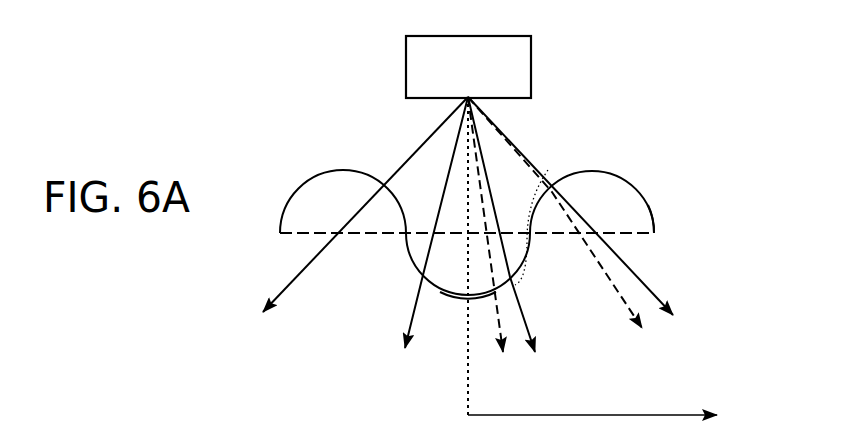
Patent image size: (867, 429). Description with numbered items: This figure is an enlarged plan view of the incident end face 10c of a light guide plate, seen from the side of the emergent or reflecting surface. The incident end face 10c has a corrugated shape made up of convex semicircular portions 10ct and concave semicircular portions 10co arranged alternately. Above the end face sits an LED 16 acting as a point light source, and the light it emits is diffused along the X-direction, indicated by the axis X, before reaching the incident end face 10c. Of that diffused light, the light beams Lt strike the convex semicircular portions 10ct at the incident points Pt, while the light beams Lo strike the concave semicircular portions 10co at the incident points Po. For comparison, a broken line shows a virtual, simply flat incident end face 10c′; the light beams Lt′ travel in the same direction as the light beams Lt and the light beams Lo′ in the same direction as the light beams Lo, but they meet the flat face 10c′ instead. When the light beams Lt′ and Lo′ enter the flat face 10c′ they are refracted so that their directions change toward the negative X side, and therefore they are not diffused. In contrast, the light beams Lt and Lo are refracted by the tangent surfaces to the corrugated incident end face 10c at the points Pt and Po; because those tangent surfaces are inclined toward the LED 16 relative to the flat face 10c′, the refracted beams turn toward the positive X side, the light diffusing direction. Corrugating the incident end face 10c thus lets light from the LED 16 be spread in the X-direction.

The LED 16 is at (406, 60).
The incident end face 10c is at (628, 138).
The convex semicircular portions 10ct is at (648, 204).
The flat incident end face 10c′ is at (630, 234).
The concave semicircular portions 10co is at (461, 294).
The incident points Pt is at (548, 172).
The incident points Po is at (518, 289).
The light beams Lt is at (475, 222).
The light beams Lo is at (467, 240).
The light beams Lt′ is at (563, 230).
The light beams Lo′ is at (490, 240).
The X-direction X is at (603, 262).